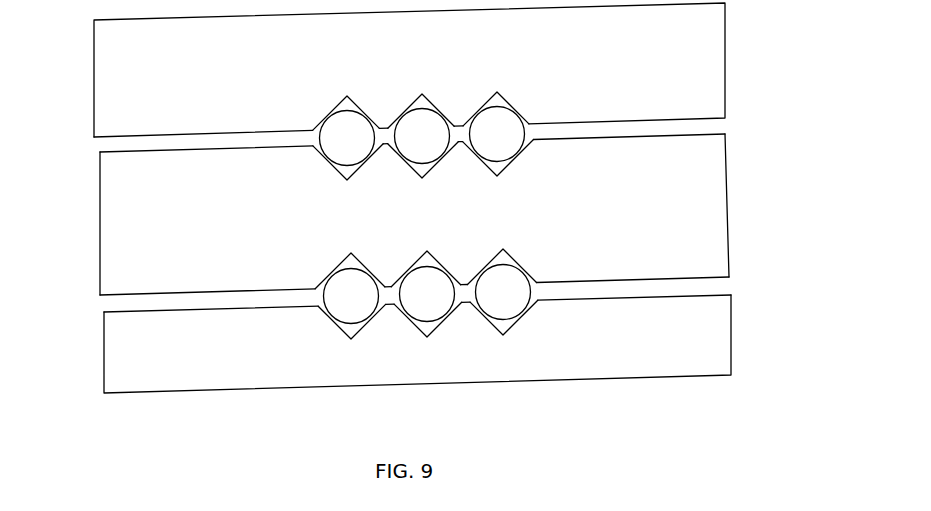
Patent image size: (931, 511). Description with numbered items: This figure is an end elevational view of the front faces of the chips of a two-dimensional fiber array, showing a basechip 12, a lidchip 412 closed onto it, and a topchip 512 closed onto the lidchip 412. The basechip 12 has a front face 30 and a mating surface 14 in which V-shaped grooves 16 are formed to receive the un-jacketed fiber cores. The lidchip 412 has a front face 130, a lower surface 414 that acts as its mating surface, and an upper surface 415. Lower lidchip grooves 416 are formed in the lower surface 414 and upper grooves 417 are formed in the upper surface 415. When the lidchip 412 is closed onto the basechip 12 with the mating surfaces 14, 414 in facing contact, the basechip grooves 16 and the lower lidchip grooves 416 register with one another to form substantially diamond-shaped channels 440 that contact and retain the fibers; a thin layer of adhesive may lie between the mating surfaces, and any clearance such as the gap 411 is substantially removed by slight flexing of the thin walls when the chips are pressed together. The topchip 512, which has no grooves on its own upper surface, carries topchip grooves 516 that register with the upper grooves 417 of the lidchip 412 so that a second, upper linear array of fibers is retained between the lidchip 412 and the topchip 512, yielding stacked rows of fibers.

The topchip 512 is at (722, 36).
The upper surface 415 is at (722, 133).
The topchip grooves 516 is at (338, 102).
The upper grooves 417 is at (340, 170).
The front face 130 is at (216, 229).
The lidchip 412 is at (78, 205).
The lower lidchip grooves 416 is at (362, 255).
The channels 440 is at (347, 335).
The lower surface 414 is at (684, 280).
The gap 411 is at (723, 286).
The mating surface 14 is at (599, 294).
The grooves 16 is at (412, 326).
The basechip 12 is at (85, 341).
The front face 30 is at (215, 358).